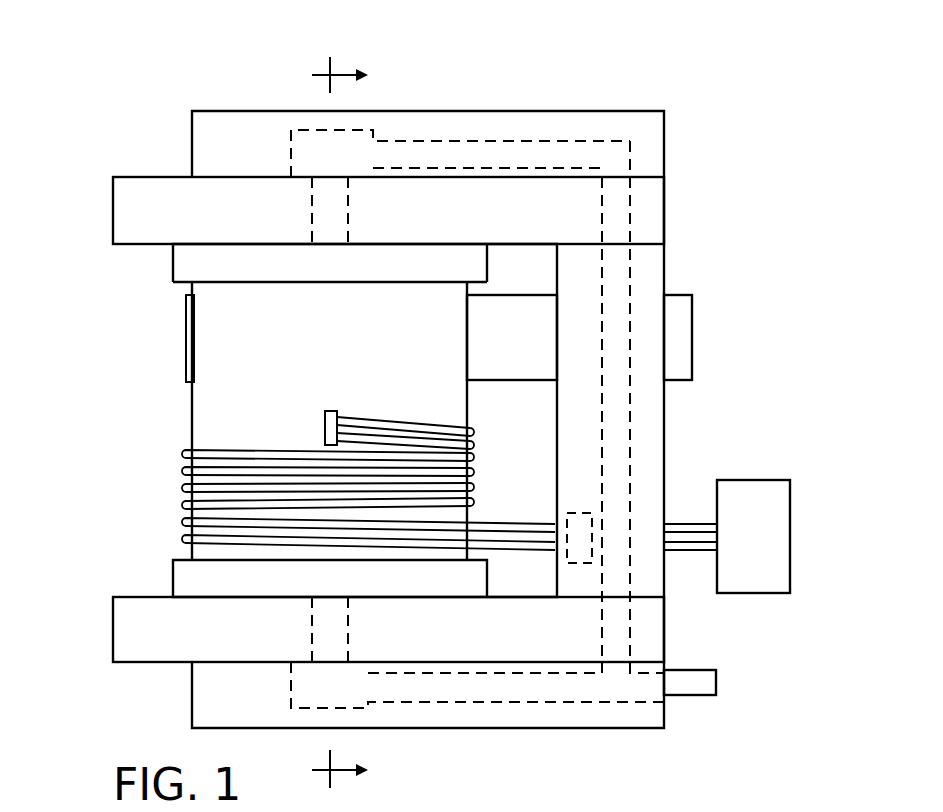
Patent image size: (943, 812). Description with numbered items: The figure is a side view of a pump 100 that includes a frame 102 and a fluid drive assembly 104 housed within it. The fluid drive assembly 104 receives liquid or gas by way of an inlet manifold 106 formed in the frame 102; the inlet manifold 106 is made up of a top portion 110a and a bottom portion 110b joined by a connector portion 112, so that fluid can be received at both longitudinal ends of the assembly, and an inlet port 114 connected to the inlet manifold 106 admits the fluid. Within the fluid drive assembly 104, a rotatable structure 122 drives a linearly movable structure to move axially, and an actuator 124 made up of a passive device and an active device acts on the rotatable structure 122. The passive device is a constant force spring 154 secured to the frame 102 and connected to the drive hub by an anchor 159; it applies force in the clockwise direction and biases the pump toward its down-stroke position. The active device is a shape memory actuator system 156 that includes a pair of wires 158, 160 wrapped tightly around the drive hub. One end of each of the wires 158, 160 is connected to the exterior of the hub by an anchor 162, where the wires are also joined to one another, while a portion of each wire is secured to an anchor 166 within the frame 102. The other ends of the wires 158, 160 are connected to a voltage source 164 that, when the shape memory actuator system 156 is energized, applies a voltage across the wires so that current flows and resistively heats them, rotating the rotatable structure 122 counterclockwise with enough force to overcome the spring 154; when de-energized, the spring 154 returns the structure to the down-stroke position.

The pump 100 is at (522, 48).
The frame 102 is at (666, 218).
The fluid drive assembly 104 is at (102, 294).
The inlet manifold 106 is at (634, 268).
The top portion of inlet manifold 110a is at (565, 136).
The bottom portion of inlet manifold 110b is at (545, 705).
The connector portion 112 is at (632, 468).
The inlet port 114 is at (694, 697).
The rotatable structure 122 is at (192, 428).
The actuator 124 is at (771, 277).
The constant force spring 154 is at (692, 357).
The shape memory actuator system 156 is at (778, 428).
The wire 158 is at (682, 524).
The anchor 159 is at (186, 372).
The wire 160 is at (682, 550).
The anchor 162 is at (340, 412).
The voltage source 164 is at (790, 500).
The anchor 166 is at (580, 513).